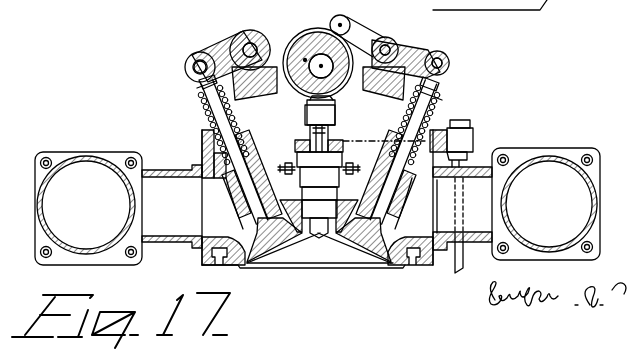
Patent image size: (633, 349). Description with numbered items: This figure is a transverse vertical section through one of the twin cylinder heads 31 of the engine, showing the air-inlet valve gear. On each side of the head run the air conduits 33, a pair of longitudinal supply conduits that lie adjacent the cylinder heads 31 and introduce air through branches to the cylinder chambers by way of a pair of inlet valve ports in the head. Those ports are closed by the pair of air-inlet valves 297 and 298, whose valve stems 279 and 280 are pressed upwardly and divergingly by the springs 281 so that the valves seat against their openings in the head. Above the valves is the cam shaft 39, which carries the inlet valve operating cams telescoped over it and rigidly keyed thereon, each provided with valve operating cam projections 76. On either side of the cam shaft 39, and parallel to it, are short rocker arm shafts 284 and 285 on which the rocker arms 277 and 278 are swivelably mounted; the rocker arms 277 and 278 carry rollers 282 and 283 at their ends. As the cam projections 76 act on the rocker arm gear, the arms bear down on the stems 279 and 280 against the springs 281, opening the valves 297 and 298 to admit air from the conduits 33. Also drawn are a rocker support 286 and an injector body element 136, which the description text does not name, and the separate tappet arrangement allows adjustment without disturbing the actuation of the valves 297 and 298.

The cylinder head 31 is at (200, 140).
The air conduit 33 is at (537, 185).
The cam shaft 39 is at (313, 52).
The valve operating cam projection 76 is at (343, 90).
The injector nozzle body 136 is at (342, 138).
The rocker arm 277 is at (420, 50).
The rocker arm 278 is at (204, 52).
The valve stem 279 is at (438, 101).
The valve stem 280 is at (195, 100).
The spring 281 is at (193, 110).
The roller 282 is at (339, 14).
The roller 283 is at (442, 56).
The rocker arm shaft 284 is at (250, 45).
The rocker arm shaft 285 is at (385, 38).
The rocker support 286 is at (288, 44).
The air-inlet valve 297 is at (371, 247).
The air-inlet valve 298 is at (273, 247).